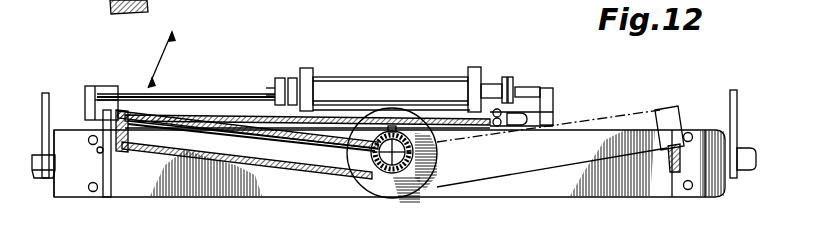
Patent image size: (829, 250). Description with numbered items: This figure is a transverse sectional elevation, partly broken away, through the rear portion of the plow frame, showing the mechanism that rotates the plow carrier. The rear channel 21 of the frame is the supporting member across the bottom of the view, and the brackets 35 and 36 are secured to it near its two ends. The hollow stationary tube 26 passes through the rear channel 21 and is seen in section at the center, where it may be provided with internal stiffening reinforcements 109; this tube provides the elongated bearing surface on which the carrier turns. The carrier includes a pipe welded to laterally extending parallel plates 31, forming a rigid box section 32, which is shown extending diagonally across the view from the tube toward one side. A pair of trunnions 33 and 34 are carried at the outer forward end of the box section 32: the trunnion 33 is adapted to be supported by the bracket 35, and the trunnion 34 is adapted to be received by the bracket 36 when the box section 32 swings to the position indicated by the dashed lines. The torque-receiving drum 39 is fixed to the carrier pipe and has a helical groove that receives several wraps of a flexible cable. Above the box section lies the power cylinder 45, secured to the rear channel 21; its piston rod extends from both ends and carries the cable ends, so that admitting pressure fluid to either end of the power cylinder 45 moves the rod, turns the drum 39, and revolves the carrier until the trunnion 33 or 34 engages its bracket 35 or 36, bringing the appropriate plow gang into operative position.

The rear channel 21 is at (188, 192).
The hollow stationary tube 26 is at (440, 195).
The parallel plates 31 is at (258, 115).
The box section 32 is at (175, 115).
The trunnion 33 is at (102, 150).
The trunnion 34 is at (115, 108).
The bracket 35 is at (123, 185).
The bracket 36 is at (672, 160).
The drum 39 is at (378, 198).
The power cylinder 45 is at (410, 82).
The internal stiffening reinforcements 109 is at (395, 158).